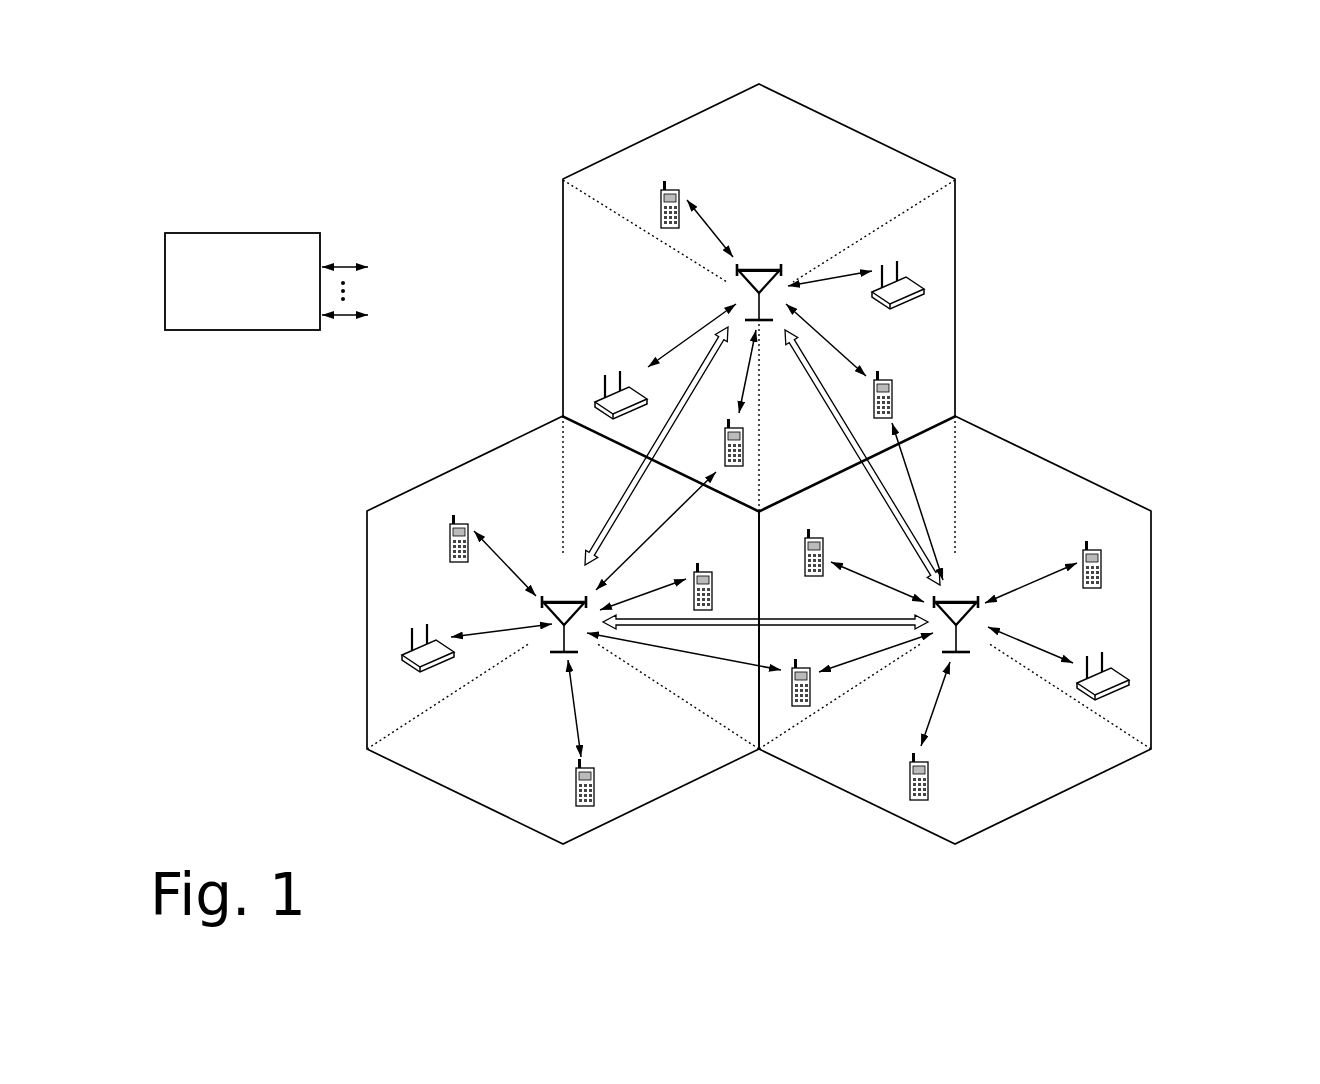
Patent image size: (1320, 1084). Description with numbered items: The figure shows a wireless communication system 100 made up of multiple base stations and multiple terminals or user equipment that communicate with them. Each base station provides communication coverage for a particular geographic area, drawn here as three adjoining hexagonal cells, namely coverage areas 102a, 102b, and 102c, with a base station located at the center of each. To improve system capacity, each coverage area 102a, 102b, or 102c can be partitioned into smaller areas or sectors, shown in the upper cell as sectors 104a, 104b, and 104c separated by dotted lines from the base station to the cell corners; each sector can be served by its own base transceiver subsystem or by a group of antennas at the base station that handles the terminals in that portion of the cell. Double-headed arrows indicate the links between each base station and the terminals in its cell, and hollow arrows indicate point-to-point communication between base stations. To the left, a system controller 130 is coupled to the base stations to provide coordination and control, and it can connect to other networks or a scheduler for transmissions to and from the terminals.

The wireless communication system 100 is at (1180, 106).
The coverage area 102a is at (845, 125).
The coverage area 102b is at (470, 461).
The coverage area 102c is at (1054, 464).
The sector 104a is at (785, 140).
The sector 104b is at (622, 275).
The sector 104c is at (833, 455).
The system controller 130 is at (240, 233).